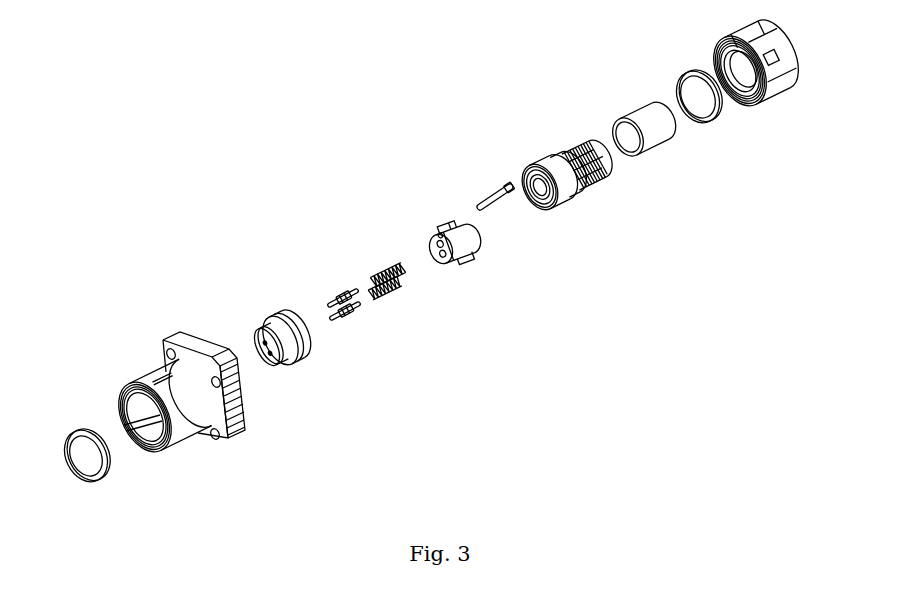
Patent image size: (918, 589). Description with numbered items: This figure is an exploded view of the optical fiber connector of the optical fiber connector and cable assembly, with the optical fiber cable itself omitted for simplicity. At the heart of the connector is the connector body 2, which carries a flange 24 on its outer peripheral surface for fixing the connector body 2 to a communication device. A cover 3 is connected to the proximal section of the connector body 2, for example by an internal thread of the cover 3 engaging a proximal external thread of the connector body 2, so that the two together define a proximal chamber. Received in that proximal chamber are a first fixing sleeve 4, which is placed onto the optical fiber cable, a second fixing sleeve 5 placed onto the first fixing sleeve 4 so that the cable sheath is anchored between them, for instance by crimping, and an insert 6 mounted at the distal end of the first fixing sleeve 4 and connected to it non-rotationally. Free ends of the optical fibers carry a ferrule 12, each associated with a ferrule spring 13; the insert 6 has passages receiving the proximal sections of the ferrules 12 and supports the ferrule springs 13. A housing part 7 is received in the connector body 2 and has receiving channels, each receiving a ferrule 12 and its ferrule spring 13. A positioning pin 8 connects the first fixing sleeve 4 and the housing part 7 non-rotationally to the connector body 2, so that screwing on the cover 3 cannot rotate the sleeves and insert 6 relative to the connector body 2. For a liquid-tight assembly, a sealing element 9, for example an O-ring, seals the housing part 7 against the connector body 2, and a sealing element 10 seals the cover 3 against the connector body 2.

The connector body 2 is at (194, 345).
The cover 3 is at (771, 92).
The first fixing sleeve 4 is at (565, 188).
The second fixing sleeve 5 is at (662, 130).
The insert 6 is at (461, 245).
The housing part 7 is at (293, 348).
The positioning pin 8 is at (507, 190).
The sealing element 9 is at (93, 441).
The sealing element 10 is at (712, 118).
The ferrule 12 is at (340, 297).
The ferrule spring 13 is at (390, 262).
The flange 24 is at (222, 372).